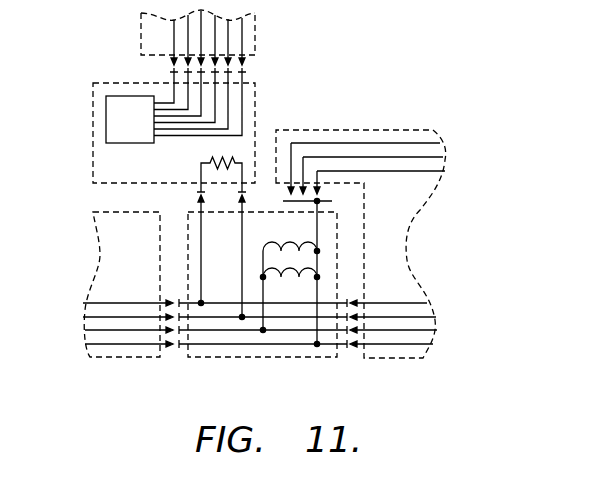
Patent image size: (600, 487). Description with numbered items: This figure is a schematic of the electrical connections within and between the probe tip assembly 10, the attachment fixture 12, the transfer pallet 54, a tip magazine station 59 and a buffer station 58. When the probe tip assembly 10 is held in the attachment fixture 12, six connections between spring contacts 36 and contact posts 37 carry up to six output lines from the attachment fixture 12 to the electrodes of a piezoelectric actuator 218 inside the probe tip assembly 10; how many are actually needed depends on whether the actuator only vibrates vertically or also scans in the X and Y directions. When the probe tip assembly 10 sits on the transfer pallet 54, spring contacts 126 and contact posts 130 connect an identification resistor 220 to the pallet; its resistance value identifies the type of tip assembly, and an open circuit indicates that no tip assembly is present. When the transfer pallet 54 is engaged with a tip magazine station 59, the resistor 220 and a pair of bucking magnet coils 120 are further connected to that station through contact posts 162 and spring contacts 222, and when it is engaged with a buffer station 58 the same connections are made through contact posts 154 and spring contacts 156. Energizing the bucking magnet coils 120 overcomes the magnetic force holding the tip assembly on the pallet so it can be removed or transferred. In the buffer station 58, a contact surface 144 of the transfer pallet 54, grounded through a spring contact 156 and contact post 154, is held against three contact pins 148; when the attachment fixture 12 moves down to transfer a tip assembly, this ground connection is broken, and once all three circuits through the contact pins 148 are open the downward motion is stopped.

The probe tip assembly 10 is at (257, 101).
The attachment fixture 12 is at (257, 32).
The spring contacts 36 is at (246, 61).
The contact posts 37 is at (172, 73).
The piezoelectric actuator 218 is at (106, 123).
The identification resistor 220 is at (218, 157).
The spring contacts 126 is at (198, 200).
The contact posts 130 is at (289, 274).
The bucking magnet coils 120 is at (307, 272).
The contact pins 148 is at (318, 186).
The contact surface 144 is at (323, 203).
The tip magazine station 59 is at (122, 358).
The spring contacts 222 is at (172, 346).
The contact posts 162 is at (180, 358).
The transfer pallet 54 is at (227, 358).
The contact posts 154 is at (346, 352).
The spring contacts 156 is at (355, 350).
The buffer station 58 is at (405, 358).